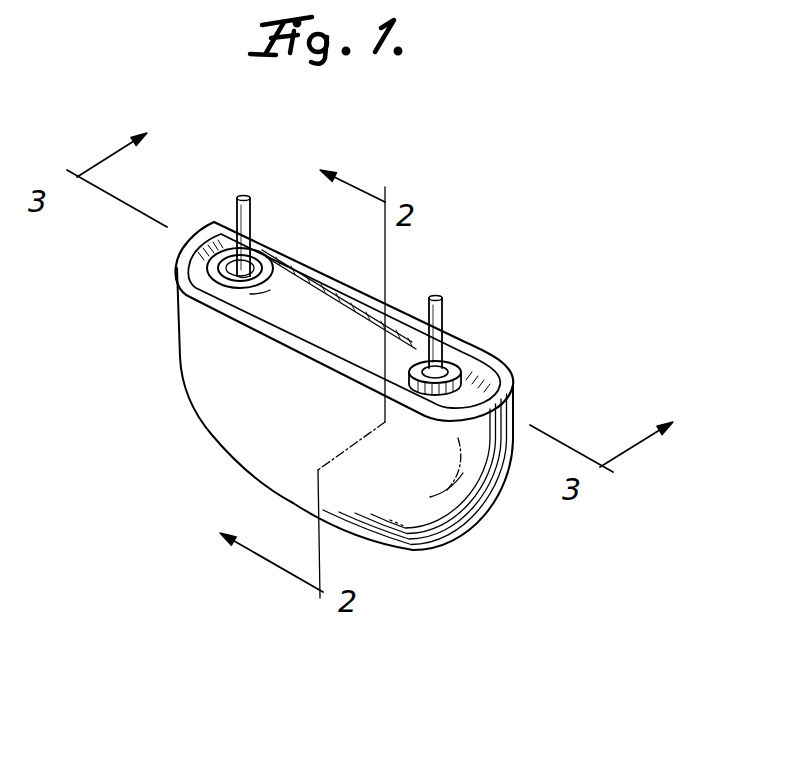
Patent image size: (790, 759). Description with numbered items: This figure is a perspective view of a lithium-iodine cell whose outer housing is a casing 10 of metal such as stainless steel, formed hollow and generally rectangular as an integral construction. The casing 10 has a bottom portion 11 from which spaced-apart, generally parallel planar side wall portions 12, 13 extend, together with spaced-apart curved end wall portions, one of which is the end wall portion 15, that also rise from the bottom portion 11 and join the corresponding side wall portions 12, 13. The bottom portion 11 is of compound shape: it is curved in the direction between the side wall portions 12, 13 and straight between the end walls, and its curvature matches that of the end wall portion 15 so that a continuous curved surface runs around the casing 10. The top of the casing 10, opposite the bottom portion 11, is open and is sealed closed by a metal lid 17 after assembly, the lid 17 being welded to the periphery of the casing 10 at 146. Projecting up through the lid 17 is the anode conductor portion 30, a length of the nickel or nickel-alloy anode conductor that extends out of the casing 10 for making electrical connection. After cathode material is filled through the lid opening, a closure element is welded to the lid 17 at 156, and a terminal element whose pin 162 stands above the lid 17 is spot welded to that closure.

The casing 10 is at (492, 231).
The bottom portion 11 is at (243, 477).
The side wall portion 12 is at (210, 392).
The side wall portion 13 is at (338, 274).
The curved end wall portion 15 is at (470, 532).
The lid 17 is at (176, 232).
The anode conductor portion 30 is at (447, 311).
The weld location on casing periphery 146 is at (397, 309).
The weld of closure element to lid 156 is at (217, 234).
The pin 162 is at (254, 212).